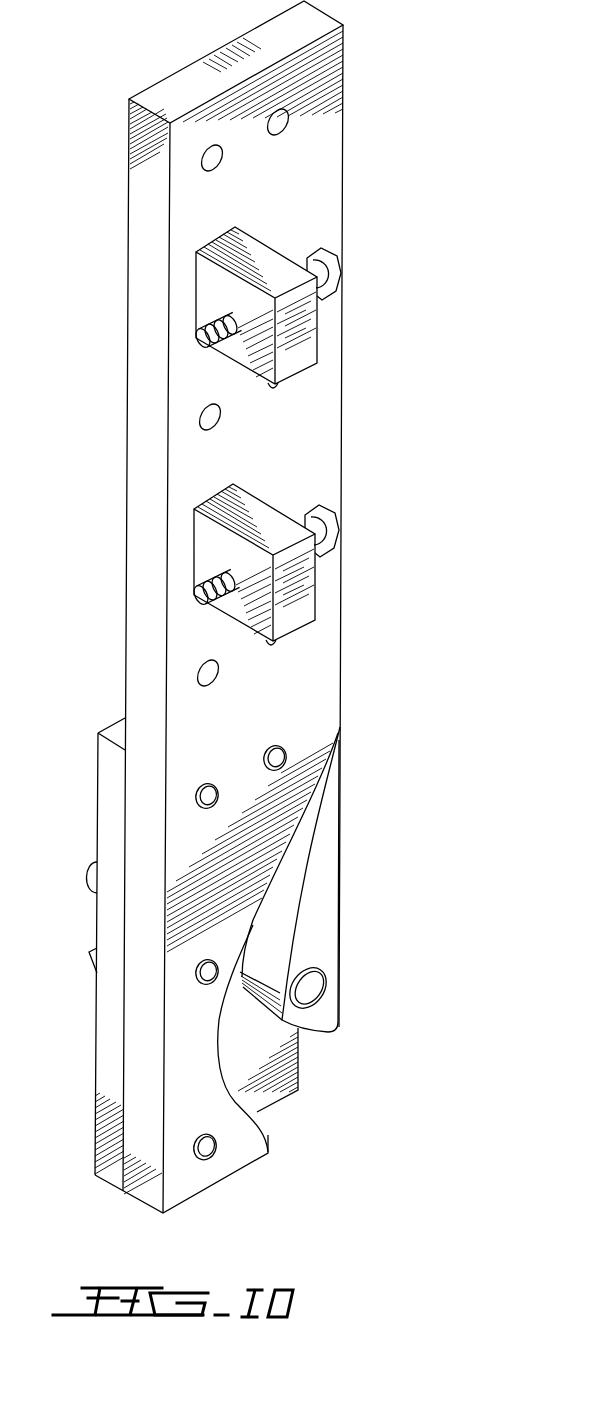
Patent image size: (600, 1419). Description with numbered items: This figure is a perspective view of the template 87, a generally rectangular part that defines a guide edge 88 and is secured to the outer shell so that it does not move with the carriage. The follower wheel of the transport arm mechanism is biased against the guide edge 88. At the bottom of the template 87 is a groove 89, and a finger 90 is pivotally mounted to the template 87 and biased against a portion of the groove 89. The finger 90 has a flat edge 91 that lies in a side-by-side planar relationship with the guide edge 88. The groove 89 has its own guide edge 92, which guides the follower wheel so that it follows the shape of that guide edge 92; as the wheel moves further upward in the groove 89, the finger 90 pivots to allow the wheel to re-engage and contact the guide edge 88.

The template 87 is at (213, 748).
The guide edge 88 is at (320, 630).
The groove 89 is at (275, 1097).
The finger 90 is at (317, 940).
The flat edge 91 is at (322, 908).
The guide edge 92 is at (205, 1062).